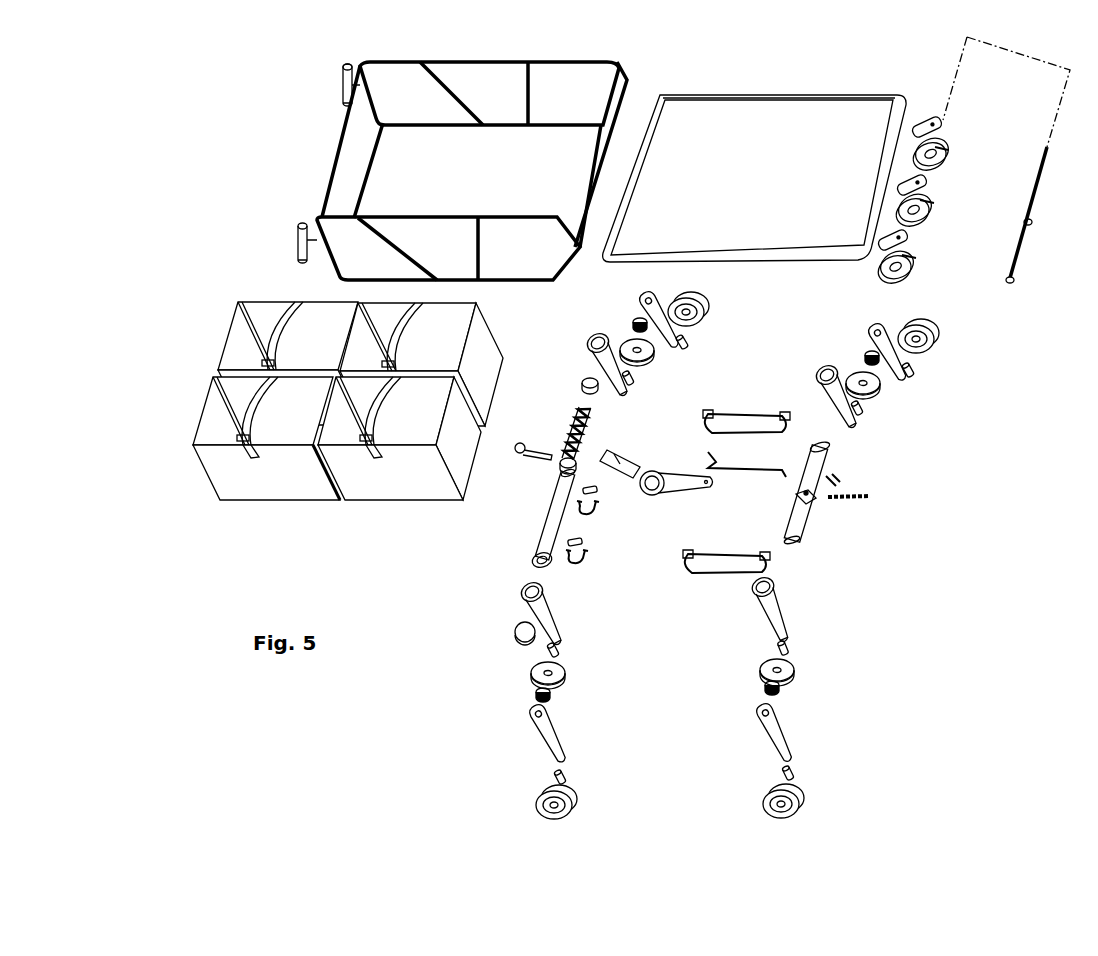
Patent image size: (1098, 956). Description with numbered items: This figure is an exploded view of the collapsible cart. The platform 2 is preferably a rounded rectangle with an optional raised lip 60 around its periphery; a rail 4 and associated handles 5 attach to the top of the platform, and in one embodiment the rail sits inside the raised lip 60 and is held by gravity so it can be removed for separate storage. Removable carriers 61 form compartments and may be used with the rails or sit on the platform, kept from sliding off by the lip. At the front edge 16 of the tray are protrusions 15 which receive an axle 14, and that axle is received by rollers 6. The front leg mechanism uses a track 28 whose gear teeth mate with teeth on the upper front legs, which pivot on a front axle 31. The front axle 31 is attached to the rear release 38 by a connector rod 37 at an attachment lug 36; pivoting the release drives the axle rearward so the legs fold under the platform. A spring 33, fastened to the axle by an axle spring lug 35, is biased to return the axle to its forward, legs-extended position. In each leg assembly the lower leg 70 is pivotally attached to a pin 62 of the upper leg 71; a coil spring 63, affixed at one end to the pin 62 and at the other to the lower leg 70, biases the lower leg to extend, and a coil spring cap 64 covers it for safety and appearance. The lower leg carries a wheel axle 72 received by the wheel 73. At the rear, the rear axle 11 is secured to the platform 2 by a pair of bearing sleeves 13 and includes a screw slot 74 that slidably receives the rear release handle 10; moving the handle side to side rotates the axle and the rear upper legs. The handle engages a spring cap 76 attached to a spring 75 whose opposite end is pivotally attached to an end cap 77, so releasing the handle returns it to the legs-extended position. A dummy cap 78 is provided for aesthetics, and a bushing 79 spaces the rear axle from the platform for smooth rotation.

The platform 2 is at (812, 112).
The rail 4 is at (507, 157).
The handles 5 is at (203, 140).
The rollers 6 is at (823, 172).
The rear release handle 10 is at (512, 464).
The rear axle 11 is at (485, 571).
The bearing sleeves 13 is at (620, 549).
The axle 14 is at (1006, 160).
The protrusions 15 is at (977, 175).
The front edge 16 is at (947, 159).
The track 28 is at (1038, 510).
The front axle 31 is at (842, 513).
The spring 33 is at (887, 512).
The axle spring lug 35 is at (860, 474).
The attachment lug 36 is at (758, 492).
The connector rod 37 is at (722, 455).
The rear release 38 is at (656, 449).
The raised lip 60 is at (779, 74).
The removable carriers 61 is at (427, 318).
The pin 62 is at (750, 517).
The coil spring 63 is at (649, 502).
The coil spring cap 64 is at (648, 511).
The lower leg 70 is at (668, 516).
The upper leg 71 is at (734, 476).
The wheel axle 72 is at (775, 554).
The wheel 73 is at (712, 546).
The screw slot 74 is at (517, 514).
The spring 75 is at (547, 420).
The spring cap 76 is at (524, 483).
The end cap 77 is at (552, 369).
The dummy cap 78 is at (475, 630).
The bushing 79 is at (624, 527).